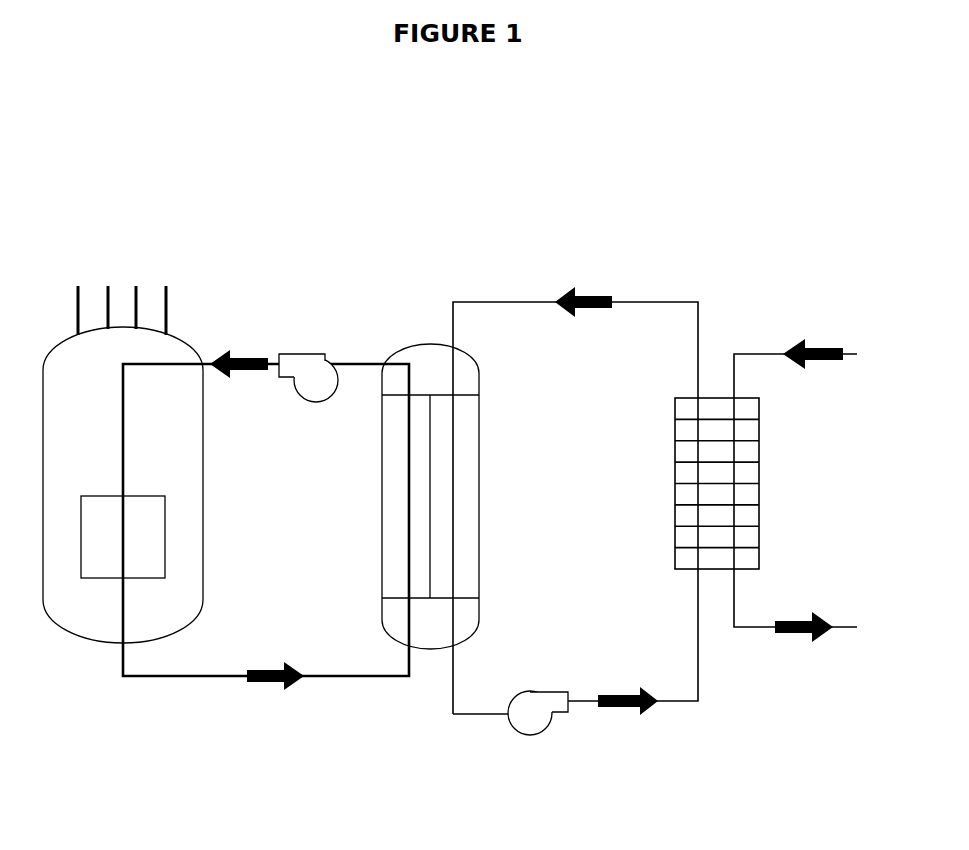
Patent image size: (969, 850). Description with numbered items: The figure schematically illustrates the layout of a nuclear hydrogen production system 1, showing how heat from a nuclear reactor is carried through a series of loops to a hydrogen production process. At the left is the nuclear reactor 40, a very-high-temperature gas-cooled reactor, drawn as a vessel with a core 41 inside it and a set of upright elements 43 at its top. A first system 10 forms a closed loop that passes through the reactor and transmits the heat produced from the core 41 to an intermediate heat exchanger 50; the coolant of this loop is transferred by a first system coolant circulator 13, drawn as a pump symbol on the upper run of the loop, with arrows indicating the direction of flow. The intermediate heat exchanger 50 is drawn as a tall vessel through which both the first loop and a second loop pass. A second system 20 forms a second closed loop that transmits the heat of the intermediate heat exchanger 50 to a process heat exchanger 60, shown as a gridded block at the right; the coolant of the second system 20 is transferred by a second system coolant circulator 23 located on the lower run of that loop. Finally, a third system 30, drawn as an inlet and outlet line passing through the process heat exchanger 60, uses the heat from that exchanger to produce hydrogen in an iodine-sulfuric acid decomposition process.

The nuclear hydrogen production system 1 is at (727, 245).
The first system 10 is at (351, 680).
The first system coolant circulator 13 is at (305, 354).
The second system 20 is at (672, 704).
The second system coolant circulator 23 is at (528, 737).
The third system 30 is at (857, 630).
The nuclear reactor 40 is at (193, 346).
The core 41 is at (98, 578).
The terminals 43 is at (103, 300).
The intermediate heat exchanger 50 is at (430, 344).
The process heat exchanger 60 is at (760, 494).